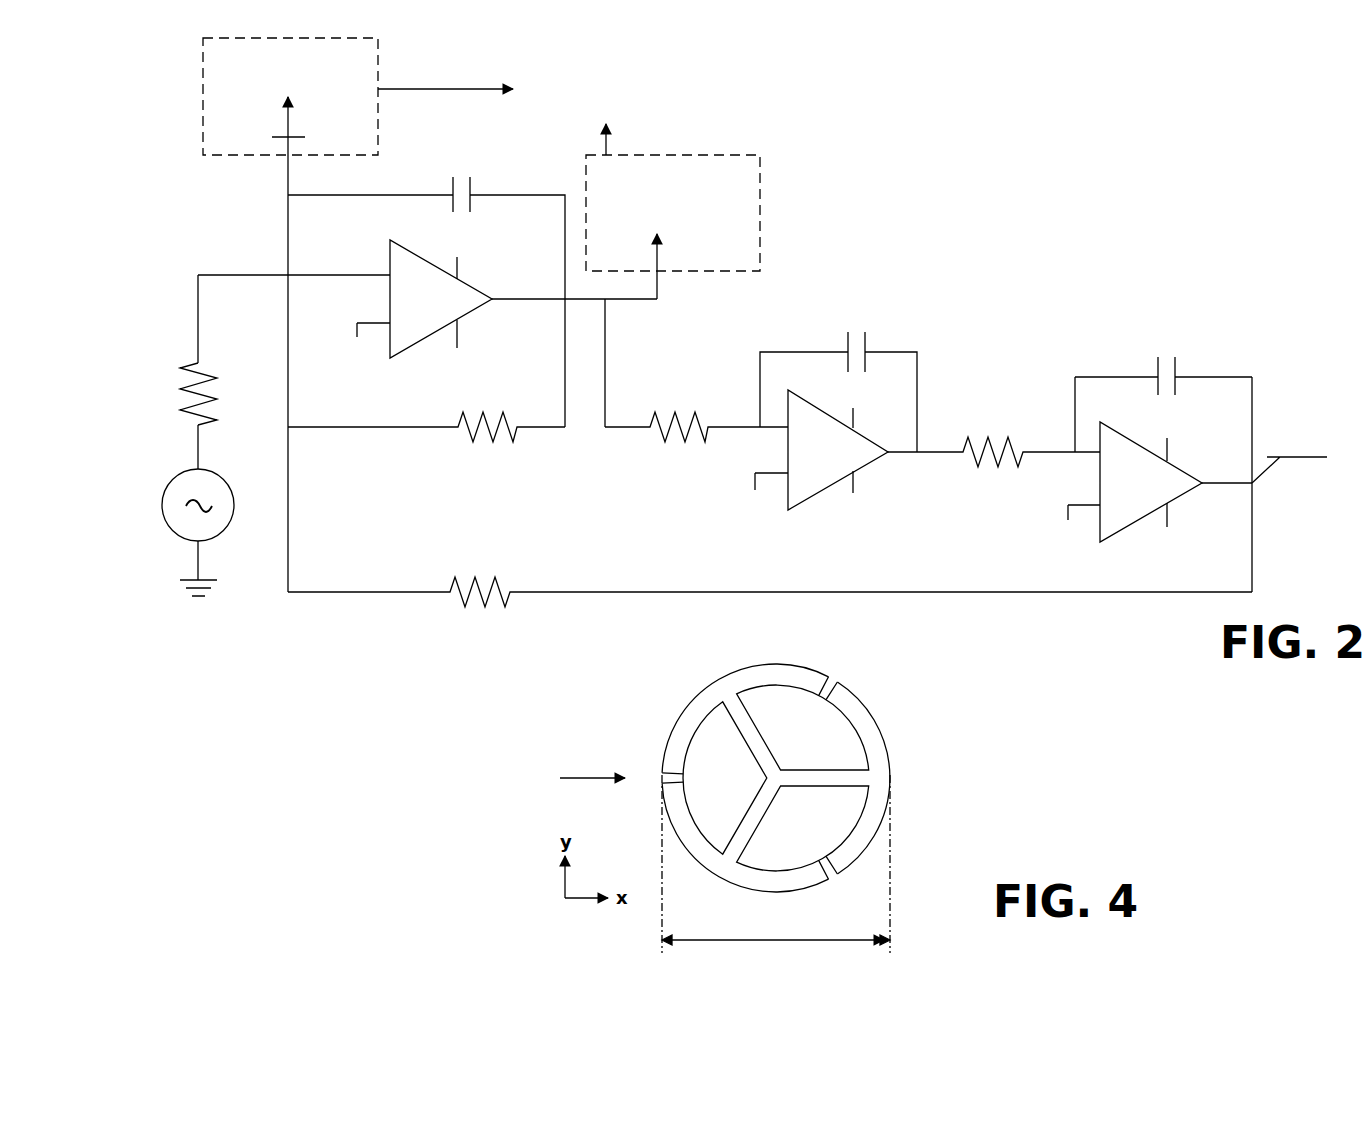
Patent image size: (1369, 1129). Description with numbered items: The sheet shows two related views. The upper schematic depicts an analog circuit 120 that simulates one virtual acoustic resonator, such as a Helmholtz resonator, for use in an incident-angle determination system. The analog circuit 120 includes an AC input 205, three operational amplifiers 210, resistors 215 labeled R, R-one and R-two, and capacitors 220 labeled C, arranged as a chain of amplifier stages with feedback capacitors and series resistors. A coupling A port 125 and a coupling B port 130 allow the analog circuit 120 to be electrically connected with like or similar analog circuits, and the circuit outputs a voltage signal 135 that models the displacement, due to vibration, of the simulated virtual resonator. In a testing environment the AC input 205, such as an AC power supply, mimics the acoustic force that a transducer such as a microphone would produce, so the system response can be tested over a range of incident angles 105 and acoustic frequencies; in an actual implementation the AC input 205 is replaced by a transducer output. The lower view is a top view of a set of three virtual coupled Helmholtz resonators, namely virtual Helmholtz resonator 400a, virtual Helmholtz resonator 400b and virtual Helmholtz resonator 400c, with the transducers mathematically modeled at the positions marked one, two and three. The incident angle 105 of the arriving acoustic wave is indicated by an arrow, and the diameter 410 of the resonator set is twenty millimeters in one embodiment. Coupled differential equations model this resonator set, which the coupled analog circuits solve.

In FIG. 2, the analog circuit 120 is at (950, 185).
In FIG. 2, the coupling A port 125 is at (203, 97).
In FIG. 2, the coupling B port 130 is at (760, 207).
In FIG. 2, the voltage signal 135 is at (1297, 457).
In FIG. 2, the AC input 205 is at (172, 530).
In FIG. 2, the operational amplifiers 210 is at (389, 258).
In FIG. 2, the resistors 215 is at (198, 363).
In FIG. 2, the capacitors 220 is at (1177, 362).
In FIG. 4, the incident angle 105 is at (595, 775).
In FIG. 4, the virtual Helmholtz resonator 400a is at (705, 733).
In FIG. 4, the virtual Helmholtz resonator 400b is at (840, 735).
In FIG. 4, the virtual Helmholtz resonator 400c is at (853, 813).
In FIG. 4, the diameter 410 is at (890, 937).